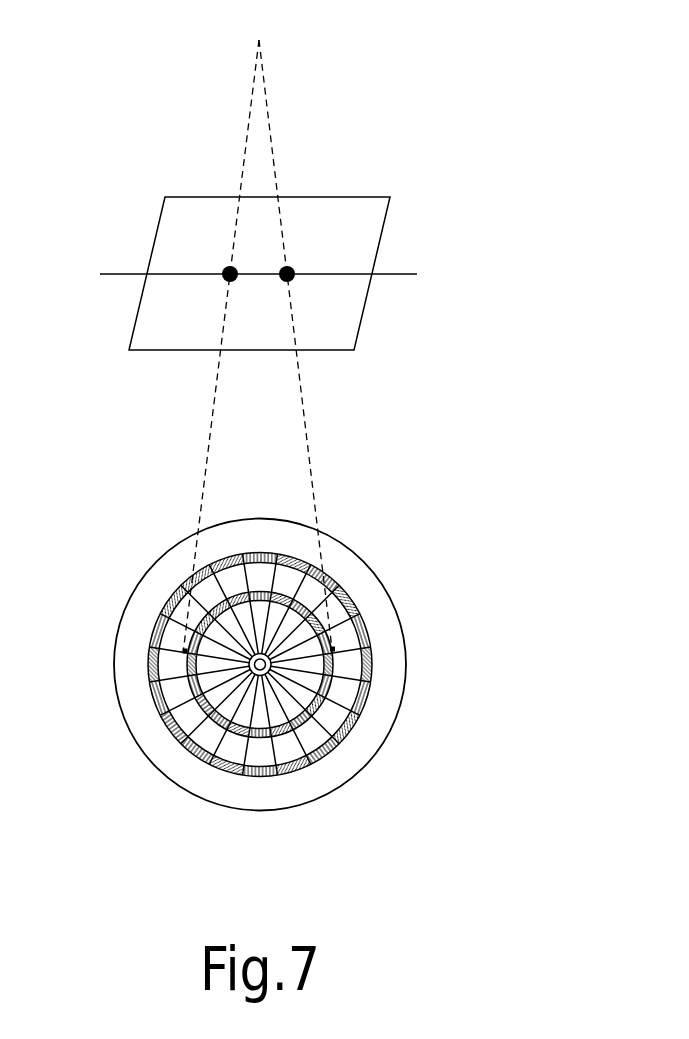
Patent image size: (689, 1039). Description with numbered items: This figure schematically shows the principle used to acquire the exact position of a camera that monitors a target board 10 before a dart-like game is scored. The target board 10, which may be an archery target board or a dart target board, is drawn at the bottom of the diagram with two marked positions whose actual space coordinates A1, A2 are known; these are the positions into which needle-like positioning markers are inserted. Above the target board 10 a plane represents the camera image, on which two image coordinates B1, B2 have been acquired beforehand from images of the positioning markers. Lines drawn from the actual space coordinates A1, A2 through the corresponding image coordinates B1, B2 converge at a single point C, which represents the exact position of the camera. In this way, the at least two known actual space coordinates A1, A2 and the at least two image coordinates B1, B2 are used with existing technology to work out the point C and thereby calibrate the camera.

The target board 10 is at (360, 582).
The point C is at (257, 328).
The image coordinate B1 is at (258, 273).
The image coordinate B2 is at (311, 260).
The actual space coordinate A1 is at (170, 663).
The actual space coordinate A2 is at (347, 662).